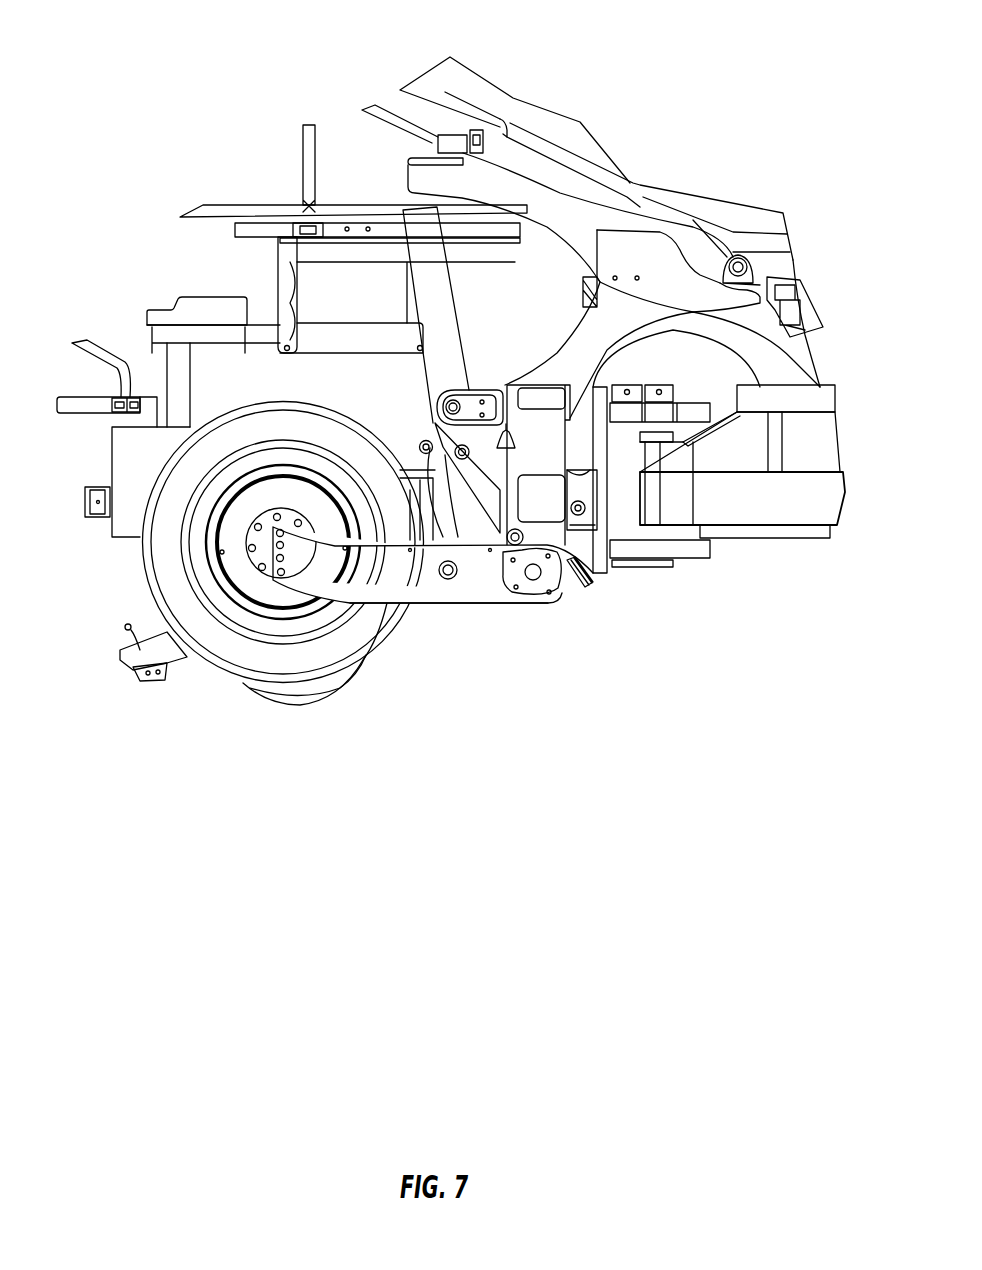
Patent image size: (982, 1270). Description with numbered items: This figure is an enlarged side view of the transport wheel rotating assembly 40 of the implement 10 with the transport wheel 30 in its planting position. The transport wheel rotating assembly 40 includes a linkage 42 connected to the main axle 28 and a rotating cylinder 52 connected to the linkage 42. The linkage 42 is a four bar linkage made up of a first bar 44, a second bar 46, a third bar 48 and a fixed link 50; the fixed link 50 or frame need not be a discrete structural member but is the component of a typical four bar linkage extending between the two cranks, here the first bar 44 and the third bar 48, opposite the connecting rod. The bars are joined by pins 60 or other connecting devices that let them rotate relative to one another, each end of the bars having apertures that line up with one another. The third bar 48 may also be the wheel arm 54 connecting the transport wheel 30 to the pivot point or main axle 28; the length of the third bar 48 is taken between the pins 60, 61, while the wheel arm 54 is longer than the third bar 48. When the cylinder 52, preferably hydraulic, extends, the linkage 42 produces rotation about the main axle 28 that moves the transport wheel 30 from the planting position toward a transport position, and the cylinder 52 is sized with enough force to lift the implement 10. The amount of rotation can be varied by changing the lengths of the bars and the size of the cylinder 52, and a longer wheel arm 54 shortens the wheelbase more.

The implement 10 is at (640, 64).
The main axle 28 is at (553, 590).
The transport wheel 30 is at (143, 565).
The transport wheel rotating assembly 40 is at (518, 673).
The linkage 42 is at (542, 608).
The first bar 44 is at (430, 445).
The second bar 46 is at (453, 497).
The third bar 48 is at (488, 582).
The fixed link 50 is at (600, 570).
The rotating cylinder 52 is at (445, 292).
The wheel arm 54 is at (383, 590).
The pins 60 is at (423, 447).
The pin 61 is at (445, 580).